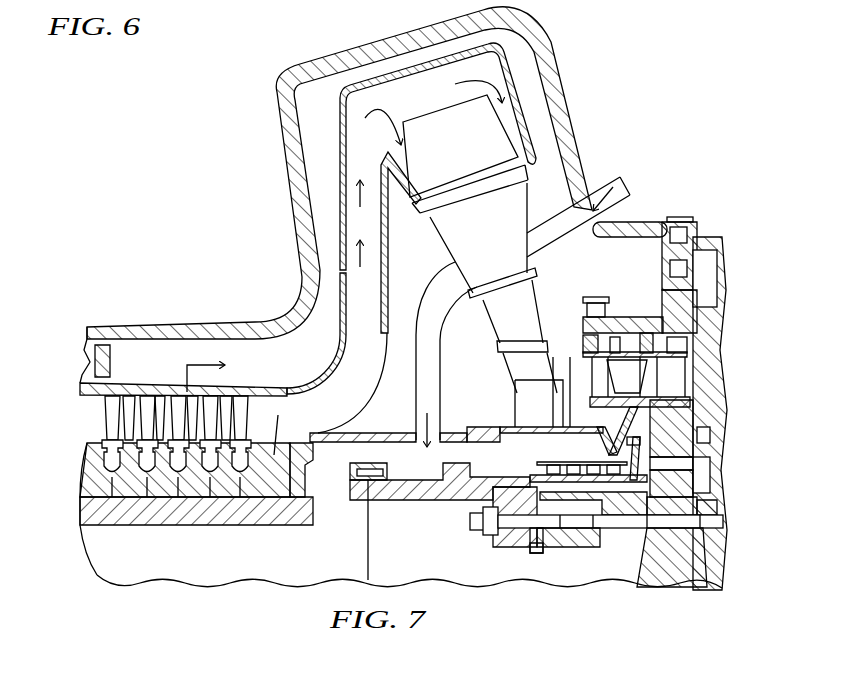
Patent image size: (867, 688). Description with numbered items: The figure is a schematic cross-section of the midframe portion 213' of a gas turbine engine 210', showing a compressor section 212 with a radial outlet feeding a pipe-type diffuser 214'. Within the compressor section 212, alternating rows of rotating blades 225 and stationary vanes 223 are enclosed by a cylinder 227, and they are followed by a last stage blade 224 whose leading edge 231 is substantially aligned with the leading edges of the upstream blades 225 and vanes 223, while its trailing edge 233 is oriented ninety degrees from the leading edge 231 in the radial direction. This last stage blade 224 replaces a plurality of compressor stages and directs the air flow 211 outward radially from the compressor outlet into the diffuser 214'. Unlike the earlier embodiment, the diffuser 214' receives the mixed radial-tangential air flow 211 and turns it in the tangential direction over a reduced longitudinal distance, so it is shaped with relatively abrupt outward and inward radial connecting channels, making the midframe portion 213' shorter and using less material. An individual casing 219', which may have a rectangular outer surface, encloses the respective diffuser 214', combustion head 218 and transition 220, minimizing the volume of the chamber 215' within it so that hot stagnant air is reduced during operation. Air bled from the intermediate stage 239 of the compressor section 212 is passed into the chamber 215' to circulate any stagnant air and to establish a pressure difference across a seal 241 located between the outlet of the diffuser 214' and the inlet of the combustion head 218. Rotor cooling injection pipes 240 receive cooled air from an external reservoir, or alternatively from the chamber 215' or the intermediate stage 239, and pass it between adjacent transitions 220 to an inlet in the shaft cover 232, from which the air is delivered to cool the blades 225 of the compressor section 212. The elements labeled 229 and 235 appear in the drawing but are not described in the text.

The gas turbine engine 210' is at (362, 173).
The midframe portion 213' is at (630, 61).
The diffuser 214' is at (395, 152).
The casing 219' is at (257, 172).
The seal 241 is at (556, 133).
The rotor cooling injection pipe 240 is at (597, 193).
The air flow 211 is at (360, 197).
The combustion head 218 is at (471, 148).
The transition 220 is at (505, 246).
The chamber 215' is at (553, 354).
The compressor section 212 is at (204, 298).
The compressor casing 229 is at (193, 326).
The trailing edge 233 is at (340, 305).
The curved turning wall 235 is at (348, 400).
The cylinder 227 is at (78, 363).
The intermediate stage 239 is at (187, 380).
The leading edge 231 is at (287, 380).
The rotating blades 225 is at (97, 420).
The stationary vanes 223 is at (113, 420).
The last stage blade 224 is at (288, 513).
The shaft cover 232 is at (143, 513).